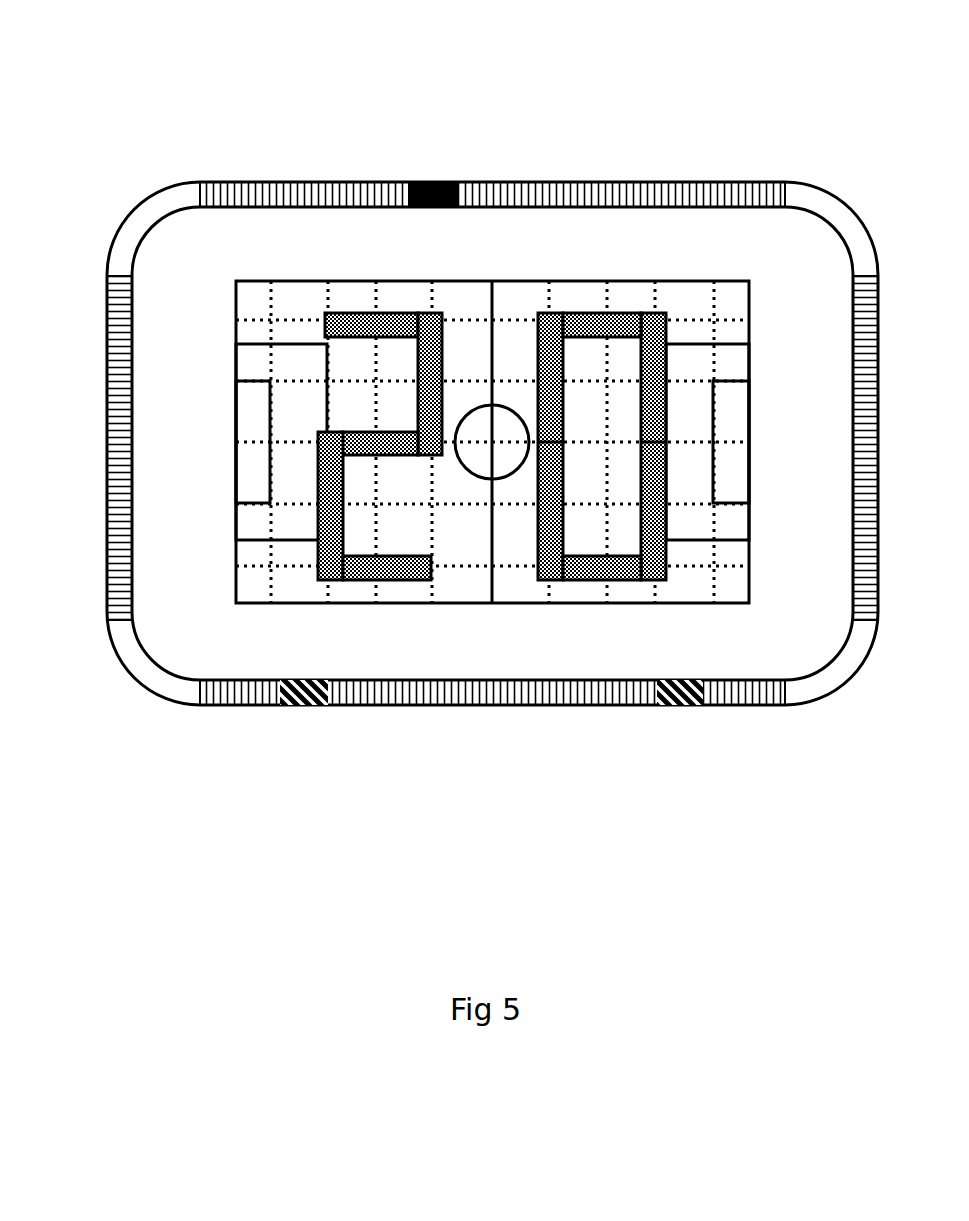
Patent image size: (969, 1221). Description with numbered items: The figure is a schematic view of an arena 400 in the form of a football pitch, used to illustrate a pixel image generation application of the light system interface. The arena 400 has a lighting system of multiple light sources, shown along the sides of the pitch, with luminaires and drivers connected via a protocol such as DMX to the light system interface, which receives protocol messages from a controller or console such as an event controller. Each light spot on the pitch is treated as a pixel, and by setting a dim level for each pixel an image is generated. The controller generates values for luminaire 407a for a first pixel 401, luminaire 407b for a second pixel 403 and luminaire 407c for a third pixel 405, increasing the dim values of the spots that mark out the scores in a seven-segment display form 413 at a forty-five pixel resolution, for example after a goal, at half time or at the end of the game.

The arena 400 is at (128, 160).
The first pixel 401 is at (433, 306).
The second pixel 403 is at (386, 490).
The third pixel 405 is at (608, 491).
The luminaire 407a is at (468, 159).
The luminaire 407b is at (321, 584).
The luminaire 407c is at (713, 576).
The 7-segment display form 413 is at (545, 592).